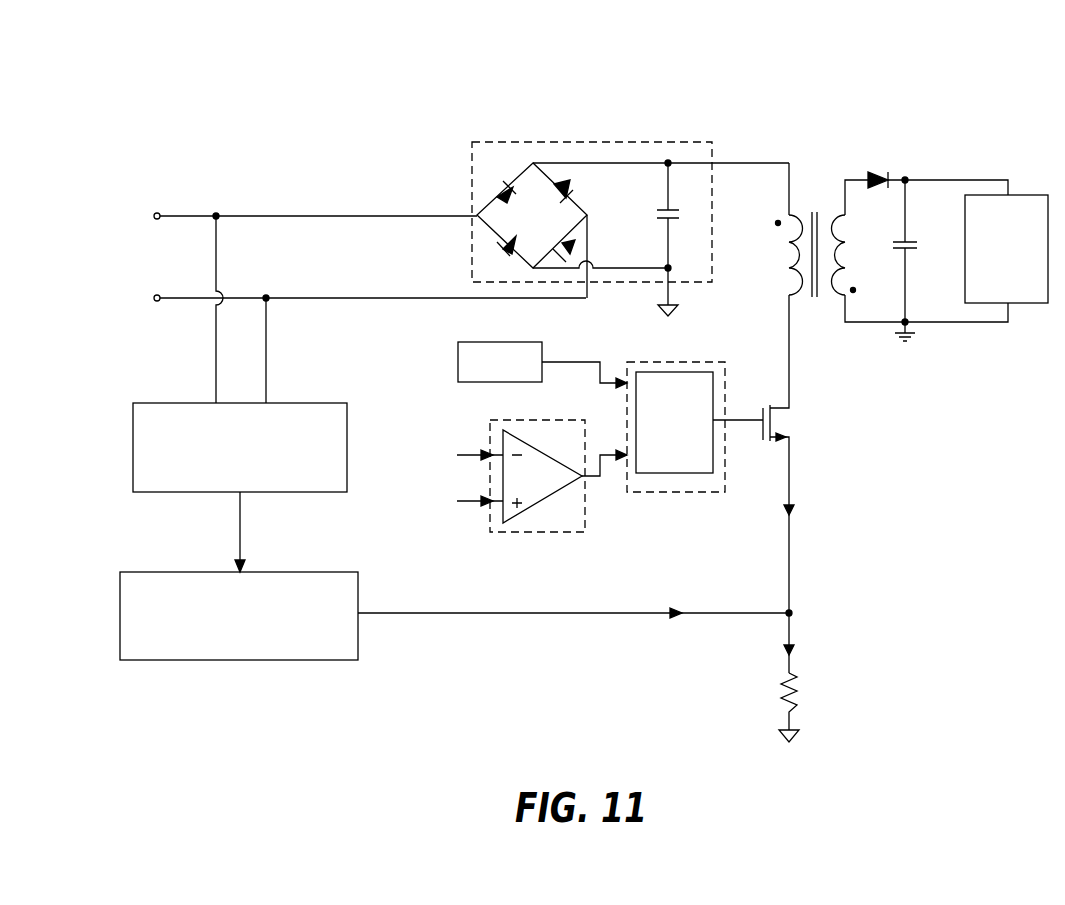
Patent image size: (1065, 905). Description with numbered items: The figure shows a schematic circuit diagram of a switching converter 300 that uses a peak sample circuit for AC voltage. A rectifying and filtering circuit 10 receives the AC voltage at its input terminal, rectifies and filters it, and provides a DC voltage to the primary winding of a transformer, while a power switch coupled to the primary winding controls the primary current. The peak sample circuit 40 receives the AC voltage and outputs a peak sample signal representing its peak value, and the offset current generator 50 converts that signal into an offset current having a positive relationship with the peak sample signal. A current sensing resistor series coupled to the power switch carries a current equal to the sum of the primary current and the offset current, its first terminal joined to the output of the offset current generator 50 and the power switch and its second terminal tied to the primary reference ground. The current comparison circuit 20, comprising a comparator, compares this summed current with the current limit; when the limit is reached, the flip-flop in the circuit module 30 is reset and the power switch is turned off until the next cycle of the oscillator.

The switching converter 300 is at (997, 82).
The rectifying and filtering circuit 10 is at (530, 142).
The current comparison circuit 20 is at (543, 532).
The circuit module 30 is at (655, 492).
The peak sample circuit 40 is at (180, 403).
The offset current generator 50 is at (187, 572).